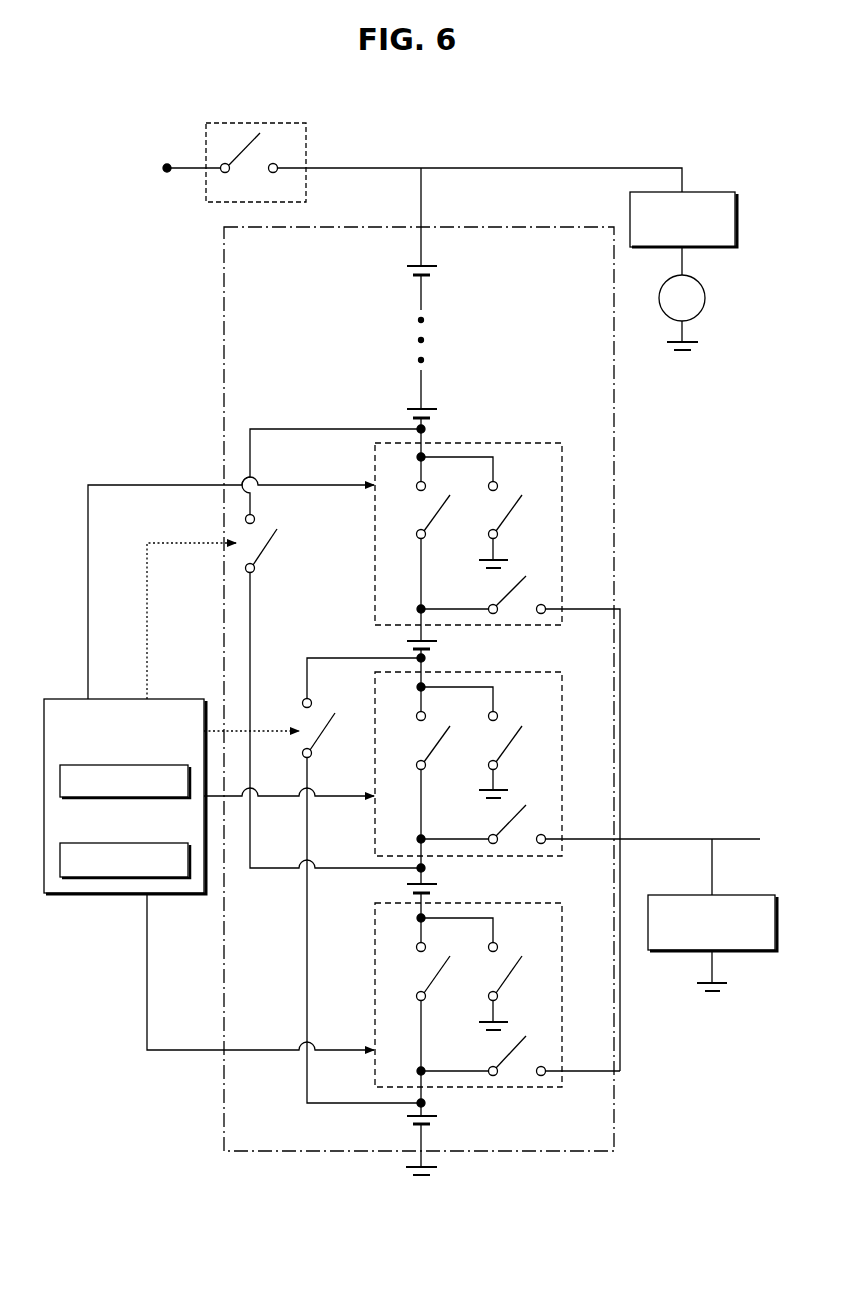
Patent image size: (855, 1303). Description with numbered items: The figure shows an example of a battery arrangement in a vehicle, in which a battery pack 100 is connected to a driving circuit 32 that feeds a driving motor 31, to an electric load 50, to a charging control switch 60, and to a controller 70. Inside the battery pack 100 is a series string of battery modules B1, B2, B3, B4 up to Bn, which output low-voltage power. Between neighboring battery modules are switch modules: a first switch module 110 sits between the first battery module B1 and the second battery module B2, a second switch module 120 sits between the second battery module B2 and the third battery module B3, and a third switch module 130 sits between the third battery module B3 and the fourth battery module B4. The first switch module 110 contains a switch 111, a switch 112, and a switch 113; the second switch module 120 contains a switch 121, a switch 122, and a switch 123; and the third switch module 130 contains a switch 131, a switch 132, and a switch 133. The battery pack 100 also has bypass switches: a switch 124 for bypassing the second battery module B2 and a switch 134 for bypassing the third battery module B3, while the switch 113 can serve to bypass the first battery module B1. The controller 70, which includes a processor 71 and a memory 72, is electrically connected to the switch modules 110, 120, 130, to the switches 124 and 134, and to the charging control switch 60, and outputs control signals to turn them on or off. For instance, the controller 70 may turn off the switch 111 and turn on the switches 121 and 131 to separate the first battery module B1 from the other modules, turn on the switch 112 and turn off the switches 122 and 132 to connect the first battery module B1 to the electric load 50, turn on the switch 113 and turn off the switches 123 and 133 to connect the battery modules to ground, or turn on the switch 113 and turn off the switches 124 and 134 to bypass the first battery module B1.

The charging control switch 60 is at (268, 124).
The driving circuit 32 is at (727, 192).
The driving motor 31 is at (705, 298).
The battery pack 100 is at (614, 453).
The third switch module 130 is at (491, 534).
The switch 131 is at (437, 515).
The switch 132 is at (502, 592).
The switch 133 is at (509, 515).
The switch 134 is at (265, 548).
The second switch module 120 is at (491, 764).
The switch 121 is at (437, 746).
The switch 122 is at (502, 822).
The switch 123 is at (509, 746).
The switch 124 is at (322, 733).
The first switch module 110 is at (491, 995).
The switch 111 is at (437, 976).
The switch 112 is at (502, 1054).
The switch 113 is at (509, 976).
The controller 70 is at (125, 782).
The processor 71 is at (168, 765).
The memory 72 is at (168, 843).
The electric load 50 is at (758, 895).
The battery module Bn is at (431, 262).
The fourth battery module B4 is at (431, 405).
The third battery module B3 is at (437, 641).
The second battery module B2 is at (437, 884).
The first battery module B1 is at (432, 1118).